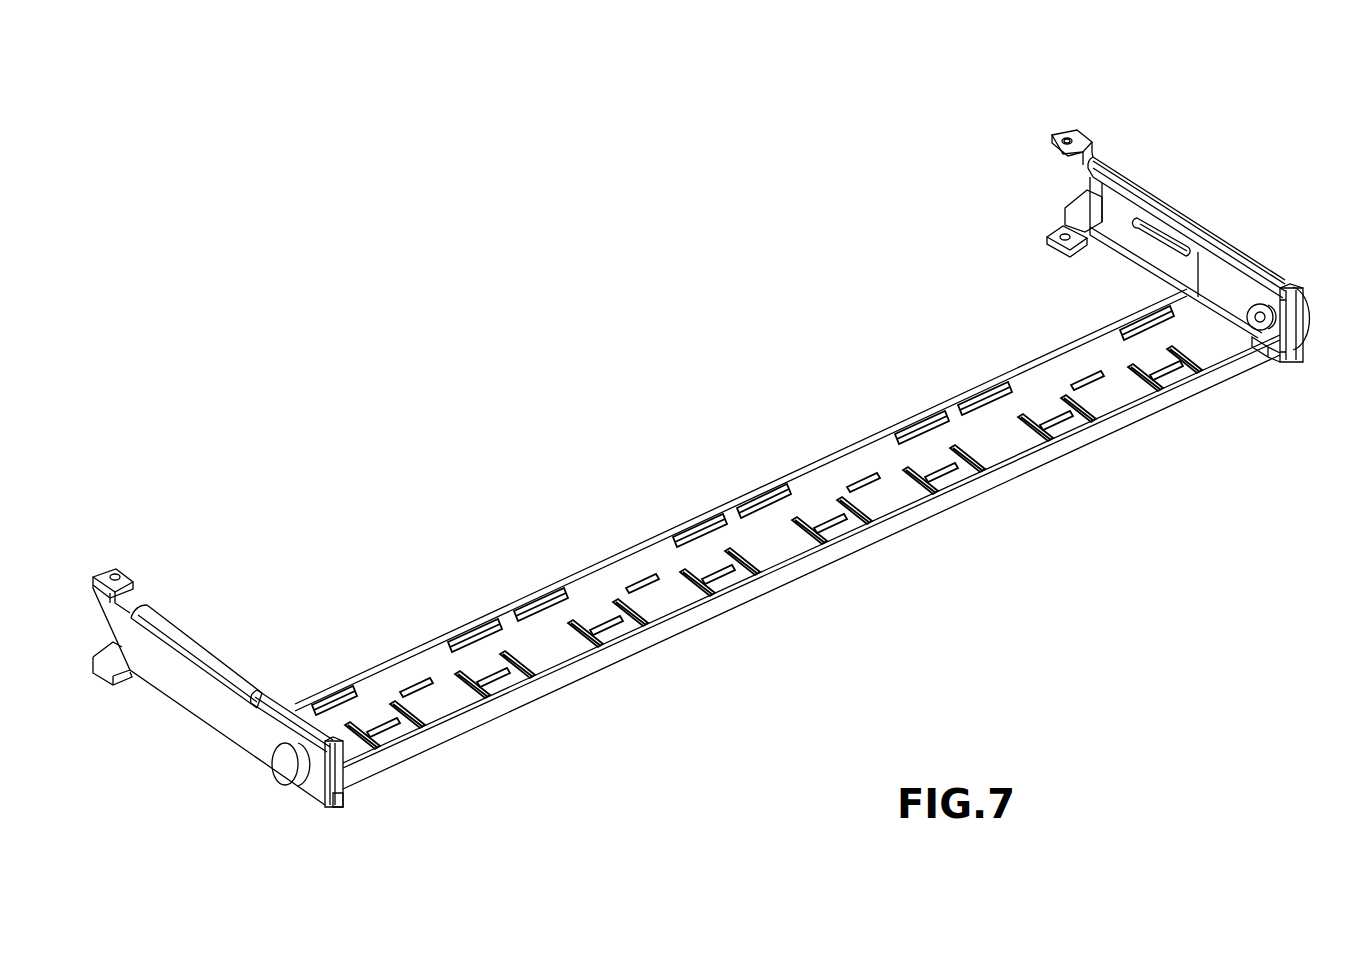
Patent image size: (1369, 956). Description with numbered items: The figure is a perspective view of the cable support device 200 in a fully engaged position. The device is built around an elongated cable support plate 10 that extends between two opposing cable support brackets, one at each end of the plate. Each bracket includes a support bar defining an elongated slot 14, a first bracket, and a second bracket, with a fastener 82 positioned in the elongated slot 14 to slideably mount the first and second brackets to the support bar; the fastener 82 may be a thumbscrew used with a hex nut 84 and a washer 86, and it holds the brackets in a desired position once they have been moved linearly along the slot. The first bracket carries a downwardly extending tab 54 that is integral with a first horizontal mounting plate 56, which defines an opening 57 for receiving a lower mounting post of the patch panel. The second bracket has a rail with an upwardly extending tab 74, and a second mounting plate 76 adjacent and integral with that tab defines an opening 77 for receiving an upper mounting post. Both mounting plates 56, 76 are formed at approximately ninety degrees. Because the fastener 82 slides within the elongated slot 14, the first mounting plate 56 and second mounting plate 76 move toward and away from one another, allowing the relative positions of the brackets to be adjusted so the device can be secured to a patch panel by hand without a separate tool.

The cable support device 200 is at (903, 170).
The cable support plate 10 is at (920, 516).
The elongated slot 14 is at (1178, 250).
The downwardly extending tab 54 is at (97, 658).
The first mounting plate 56 is at (1057, 229).
The opening 57 is at (1053, 244).
The upwardly extending tab 74 is at (103, 598).
The second mounting plate 76 is at (125, 570).
The opening 77 is at (1058, 134).
The fastener 82 is at (284, 768).
The hex nut 84 is at (1278, 358).
The washer 86 is at (1272, 323).